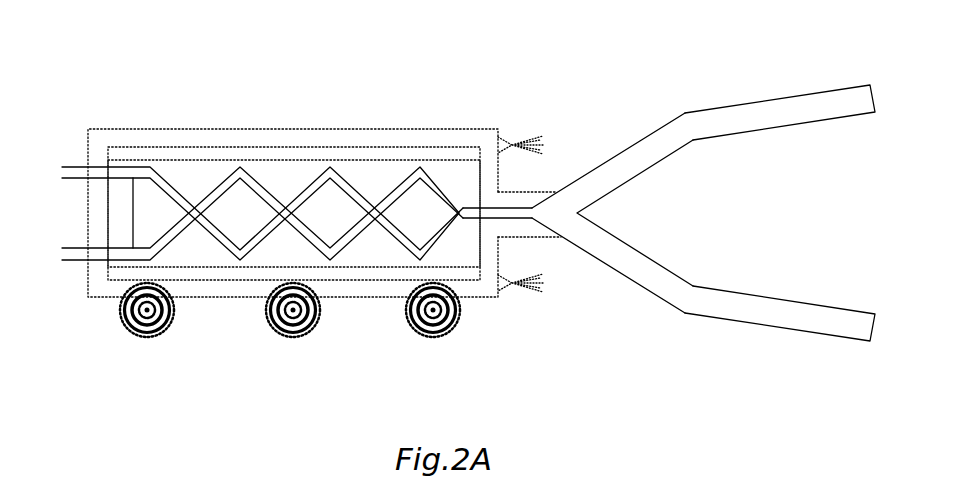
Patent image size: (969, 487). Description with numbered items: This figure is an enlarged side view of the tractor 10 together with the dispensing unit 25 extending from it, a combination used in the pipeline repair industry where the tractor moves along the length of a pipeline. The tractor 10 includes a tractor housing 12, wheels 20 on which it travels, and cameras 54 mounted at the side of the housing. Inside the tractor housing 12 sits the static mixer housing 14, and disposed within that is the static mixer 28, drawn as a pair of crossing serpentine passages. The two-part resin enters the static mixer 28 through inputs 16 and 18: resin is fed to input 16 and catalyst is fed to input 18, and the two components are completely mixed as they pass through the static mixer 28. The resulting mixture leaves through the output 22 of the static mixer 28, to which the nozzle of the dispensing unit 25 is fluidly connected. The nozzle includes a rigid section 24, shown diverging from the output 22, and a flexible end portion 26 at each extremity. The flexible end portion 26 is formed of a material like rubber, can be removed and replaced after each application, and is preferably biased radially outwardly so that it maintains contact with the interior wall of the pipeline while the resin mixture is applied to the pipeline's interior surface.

The tractor 10 is at (199, 58).
The tractor housing 12 is at (187, 128).
The static mixer housing 14 is at (407, 147).
The input 16 is at (78, 166).
The input 18 is at (78, 247).
The wheels 20 is at (125, 330).
The output 22 is at (506, 192).
The rigid section 24 is at (634, 145).
The dispensing unit 25 is at (681, 74).
The flexible end portion 26 is at (832, 90).
The static mixer 28 is at (285, 160).
The cameras 54 is at (500, 137).